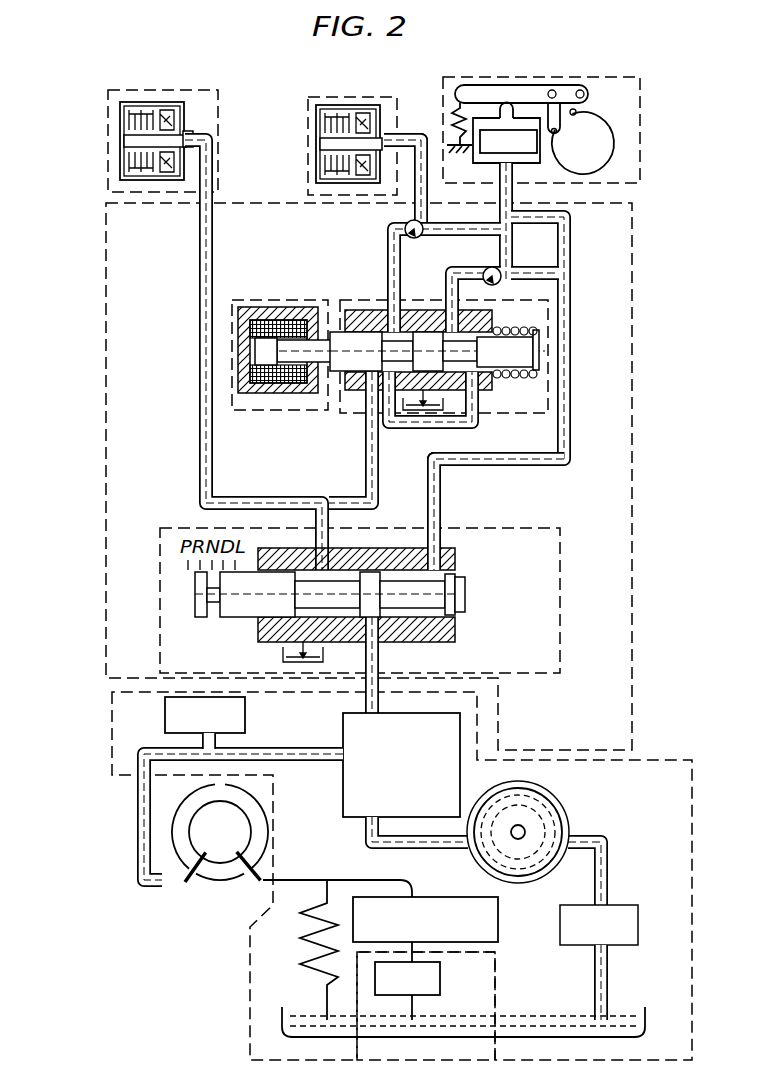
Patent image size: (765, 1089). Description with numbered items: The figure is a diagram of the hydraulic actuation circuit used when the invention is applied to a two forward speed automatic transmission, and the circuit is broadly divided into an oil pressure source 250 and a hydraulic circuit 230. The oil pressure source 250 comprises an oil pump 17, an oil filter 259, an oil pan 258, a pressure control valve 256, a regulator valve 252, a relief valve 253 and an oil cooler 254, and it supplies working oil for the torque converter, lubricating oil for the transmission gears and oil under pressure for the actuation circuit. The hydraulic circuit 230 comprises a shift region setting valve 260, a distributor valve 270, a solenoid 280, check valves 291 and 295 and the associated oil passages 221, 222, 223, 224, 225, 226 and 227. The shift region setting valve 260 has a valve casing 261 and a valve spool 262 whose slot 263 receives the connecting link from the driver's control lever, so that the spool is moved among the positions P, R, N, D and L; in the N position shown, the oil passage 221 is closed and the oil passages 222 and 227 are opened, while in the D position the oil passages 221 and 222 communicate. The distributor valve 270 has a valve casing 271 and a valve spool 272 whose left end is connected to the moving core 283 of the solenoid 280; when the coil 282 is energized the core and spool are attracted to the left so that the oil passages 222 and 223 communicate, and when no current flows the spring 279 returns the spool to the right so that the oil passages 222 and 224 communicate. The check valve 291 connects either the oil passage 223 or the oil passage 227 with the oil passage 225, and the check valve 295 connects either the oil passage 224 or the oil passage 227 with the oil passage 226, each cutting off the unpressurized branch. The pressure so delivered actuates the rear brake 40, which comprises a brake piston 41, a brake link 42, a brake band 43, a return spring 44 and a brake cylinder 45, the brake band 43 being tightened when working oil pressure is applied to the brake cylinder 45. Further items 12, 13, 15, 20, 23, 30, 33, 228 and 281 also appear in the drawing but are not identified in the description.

The pump ring segment 12 is at (267, 824).
The pump ring segment 13 is at (185, 822).
The pump ring segment 15 is at (212, 890).
The oil pump 17 is at (570, 816).
The first clutch 20 is at (199, 90).
The clutch port 23 is at (186, 120).
The second clutch 30 is at (340, 97).
The clutch supply passage 33 is at (386, 105).
The rear brake 40 is at (506, 77).
The brake piston 41 is at (520, 163).
The brake link 42 is at (569, 86).
The brake band 43 is at (590, 118).
The return spring 44 is at (450, 122).
The brake cylinder 45 is at (483, 163).
The oil passage 221 is at (380, 657).
The oil passage 222 is at (324, 500).
The oil passage 223 is at (390, 262).
The oil passage 224 is at (450, 272).
The oil passage 225 is at (418, 196).
The oil passage 226 is at (572, 222).
The oil passage 227 is at (440, 495).
The return passage 228 is at (137, 838).
The hydraulic circuit 230 is at (106, 565).
The oil pressure source 250 is at (112, 696).
The regulator valve 252 is at (343, 730).
The relief valve 253 is at (165, 704).
The oil cooler 254 is at (303, 962).
The pressure control valve 256 is at (425, 897).
The oil pan 258 is at (643, 1007).
The oil filter 259 is at (620, 905).
The shift region setting valve 260 is at (520, 528).
The valve casing 261 is at (397, 548).
The valve spool 262 is at (465, 588).
The slot 263 is at (210, 617).
The distributor valve 270 is at (378, 308).
The valve casing 271 is at (418, 314).
The valve spool 272 is at (540, 378).
The spring 279 is at (520, 332).
The solenoid 280 is at (255, 300).
The solenoid coil 281 is at (311, 320).
The coil 282 is at (283, 318).
The moving core 283 is at (318, 365).
The check valve 291 is at (455, 232).
The check valve 295 is at (535, 272).